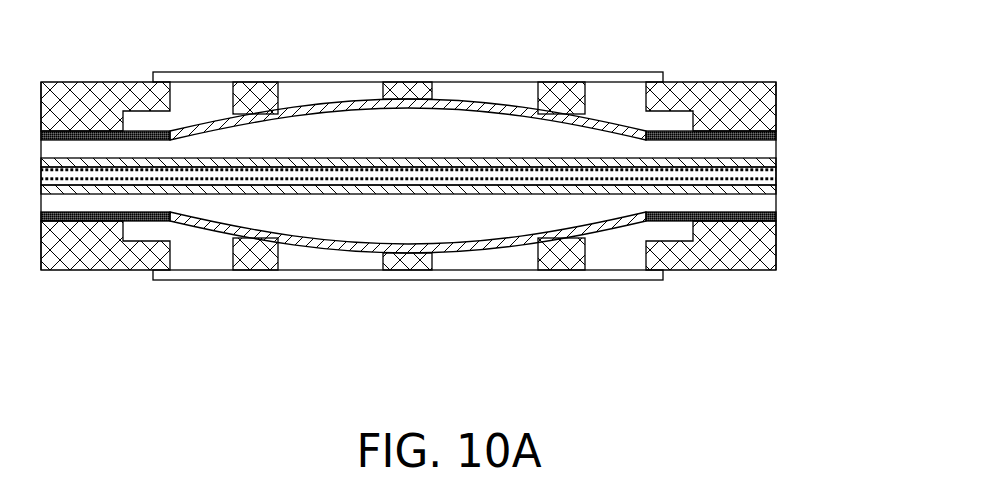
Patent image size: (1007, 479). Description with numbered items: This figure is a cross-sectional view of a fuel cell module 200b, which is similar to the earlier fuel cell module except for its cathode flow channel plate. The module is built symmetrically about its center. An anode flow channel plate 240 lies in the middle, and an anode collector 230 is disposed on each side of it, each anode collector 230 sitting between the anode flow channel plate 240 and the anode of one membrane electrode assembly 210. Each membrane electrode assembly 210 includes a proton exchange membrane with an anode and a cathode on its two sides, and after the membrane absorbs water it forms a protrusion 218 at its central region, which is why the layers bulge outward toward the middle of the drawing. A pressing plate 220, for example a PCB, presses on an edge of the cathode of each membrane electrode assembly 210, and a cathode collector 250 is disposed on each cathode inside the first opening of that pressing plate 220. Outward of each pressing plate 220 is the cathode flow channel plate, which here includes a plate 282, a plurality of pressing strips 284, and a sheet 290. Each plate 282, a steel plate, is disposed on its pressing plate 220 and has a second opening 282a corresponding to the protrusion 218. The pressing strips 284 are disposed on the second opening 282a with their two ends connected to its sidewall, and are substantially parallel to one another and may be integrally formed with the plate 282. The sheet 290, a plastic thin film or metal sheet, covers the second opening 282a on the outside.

The fuel cell module 200b is at (812, 388).
The membrane electrode assembly 210 is at (753, 147).
The protrusion 218 is at (443, 118).
The pressing plate 220 is at (777, 136).
The anode collector 230 is at (777, 160).
The anode flow channel plate 240 is at (750, 175).
The cathode collector 250 is at (322, 103).
The plate 282 is at (758, 95).
The second opening 282a is at (170, 97).
The pressing strip 284 is at (563, 93).
The sheet 290 is at (605, 77).